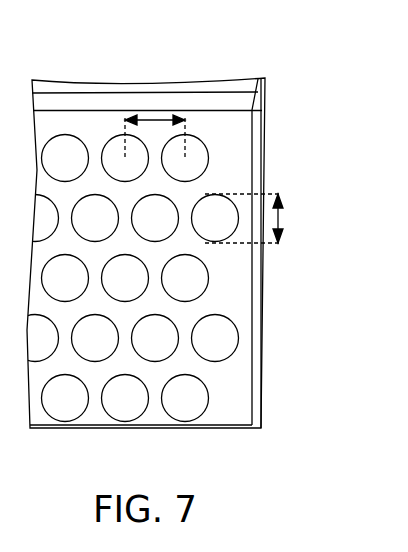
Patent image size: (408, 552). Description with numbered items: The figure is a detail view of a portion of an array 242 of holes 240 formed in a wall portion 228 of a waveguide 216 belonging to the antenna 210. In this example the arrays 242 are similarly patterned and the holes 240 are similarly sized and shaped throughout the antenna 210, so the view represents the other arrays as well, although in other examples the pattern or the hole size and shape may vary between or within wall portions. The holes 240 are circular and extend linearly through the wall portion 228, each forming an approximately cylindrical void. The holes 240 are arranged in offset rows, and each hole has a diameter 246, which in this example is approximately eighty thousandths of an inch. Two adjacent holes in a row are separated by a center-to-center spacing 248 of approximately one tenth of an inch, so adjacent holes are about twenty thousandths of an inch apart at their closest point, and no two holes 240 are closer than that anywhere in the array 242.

The antenna 210 is at (280, 106).
The waveguide 216 is at (262, 335).
The wall portion 228 is at (242, 400).
The holes 240 is at (208, 158).
The array 242 is at (284, 294).
The diameter 246 is at (283, 220).
The center-to-center spacing 248 is at (154, 116).